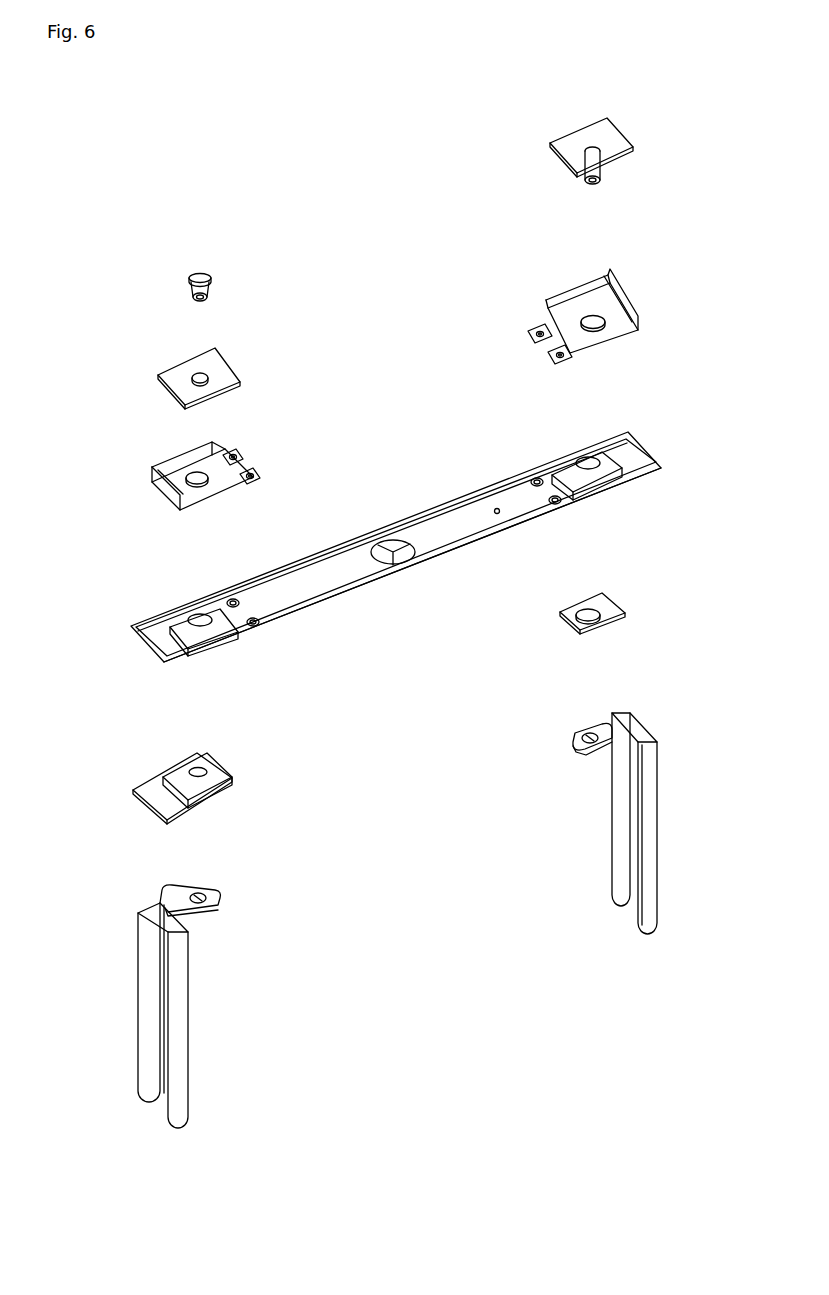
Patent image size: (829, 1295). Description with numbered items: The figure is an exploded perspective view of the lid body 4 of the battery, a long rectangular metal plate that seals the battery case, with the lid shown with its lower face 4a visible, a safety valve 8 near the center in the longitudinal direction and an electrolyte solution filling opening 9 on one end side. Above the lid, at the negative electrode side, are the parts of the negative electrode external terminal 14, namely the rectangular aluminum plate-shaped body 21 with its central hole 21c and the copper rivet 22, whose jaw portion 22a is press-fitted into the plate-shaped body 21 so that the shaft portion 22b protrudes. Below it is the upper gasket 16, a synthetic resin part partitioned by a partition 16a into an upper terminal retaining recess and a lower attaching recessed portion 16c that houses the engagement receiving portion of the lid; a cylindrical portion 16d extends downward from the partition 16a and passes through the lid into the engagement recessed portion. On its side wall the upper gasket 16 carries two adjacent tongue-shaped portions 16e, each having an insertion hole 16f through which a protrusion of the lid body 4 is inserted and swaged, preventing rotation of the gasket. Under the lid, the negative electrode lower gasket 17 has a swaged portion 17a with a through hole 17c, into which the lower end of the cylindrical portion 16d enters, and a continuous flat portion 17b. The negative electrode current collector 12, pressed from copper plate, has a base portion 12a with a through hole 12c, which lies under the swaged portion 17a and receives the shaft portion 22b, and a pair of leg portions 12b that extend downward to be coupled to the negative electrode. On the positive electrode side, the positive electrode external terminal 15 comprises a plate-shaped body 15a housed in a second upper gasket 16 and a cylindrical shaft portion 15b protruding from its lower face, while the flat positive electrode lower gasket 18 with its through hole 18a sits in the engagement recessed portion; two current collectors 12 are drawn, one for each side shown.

The lid body 4 is at (407, 531).
The lower face 4a is at (638, 468).
The safety valve 8 is at (402, 558).
The electrolyte solution filling opening 9 is at (497, 515).
The negative electrode current collector 12 is at (399, 905).
The base portion 12a is at (590, 753).
The leg portions 12b is at (622, 892).
The through hole 12c is at (577, 735).
The negative electrode external terminal 14 is at (224, 327).
The positive electrode external terminal 15 is at (589, 152).
The plate-shaped body 15a is at (573, 143).
The cylindrical shaft portion 15b is at (603, 164).
The upper gasket 16 is at (397, 396).
The partition 16a is at (170, 485).
The attaching recessed portion 16c is at (218, 478).
The cylindrical portion 16d is at (201, 488).
The tongue-shaped portions 16e is at (240, 456).
The insertion hole 16f is at (233, 453).
The negative electrode lower gasket 17 is at (198, 788).
The swaged portion 17a is at (218, 773).
The flat portion 17b is at (182, 810).
The through hole 17c is at (220, 792).
The positive electrode lower gasket 18 is at (602, 613).
The through hole 18a is at (587, 621).
The plate-shaped body 21 is at (225, 383).
The plate hole 21c is at (200, 381).
The rivet 22 is at (201, 273).
The jaw portion 22a is at (203, 272).
The shaft portion 22b is at (190, 292).